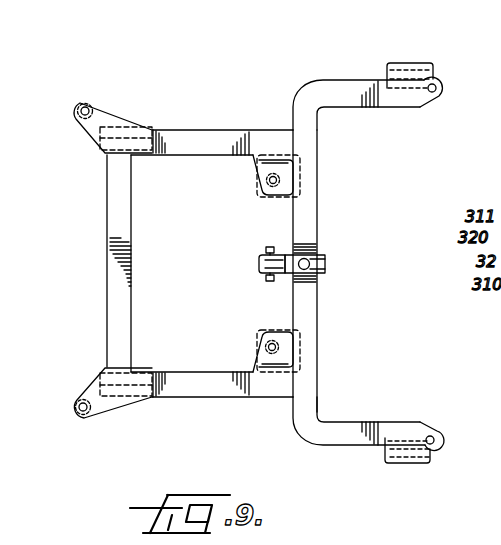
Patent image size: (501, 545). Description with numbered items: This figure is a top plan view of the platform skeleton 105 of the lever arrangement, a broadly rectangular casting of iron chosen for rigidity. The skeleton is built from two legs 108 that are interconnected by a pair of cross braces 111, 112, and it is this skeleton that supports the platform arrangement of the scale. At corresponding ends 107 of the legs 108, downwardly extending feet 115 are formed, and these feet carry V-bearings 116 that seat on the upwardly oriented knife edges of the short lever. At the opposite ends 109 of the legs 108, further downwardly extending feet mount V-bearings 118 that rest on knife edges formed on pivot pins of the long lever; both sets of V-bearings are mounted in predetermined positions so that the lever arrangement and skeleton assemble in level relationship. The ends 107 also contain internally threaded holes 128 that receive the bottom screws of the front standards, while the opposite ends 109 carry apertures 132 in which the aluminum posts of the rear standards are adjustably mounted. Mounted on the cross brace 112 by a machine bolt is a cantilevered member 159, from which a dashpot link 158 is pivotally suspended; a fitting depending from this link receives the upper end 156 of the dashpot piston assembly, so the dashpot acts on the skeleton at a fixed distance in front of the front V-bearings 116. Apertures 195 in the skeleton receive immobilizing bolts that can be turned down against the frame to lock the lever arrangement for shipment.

The platform skeleton 105 is at (103, 302).
The ends of the legs 107 is at (348, 80).
The legs 108 is at (218, 130).
The opposite ends of the legs 109 is at (110, 125).
The cross brace 111 is at (107, 260).
The cross brace 112 is at (317, 218).
The feet 115 is at (417, 65).
The V-bearings 116 is at (404, 91).
The V-bearings 118 is at (140, 158).
The internally threaded holes 128 is at (437, 84).
The apertures 132 is at (82, 104).
The upper end of the piston assembly 156 is at (265, 243).
The dashpot link 158 is at (257, 255).
The cantilevered member 159 is at (284, 253).
The apertures 195 is at (268, 182).